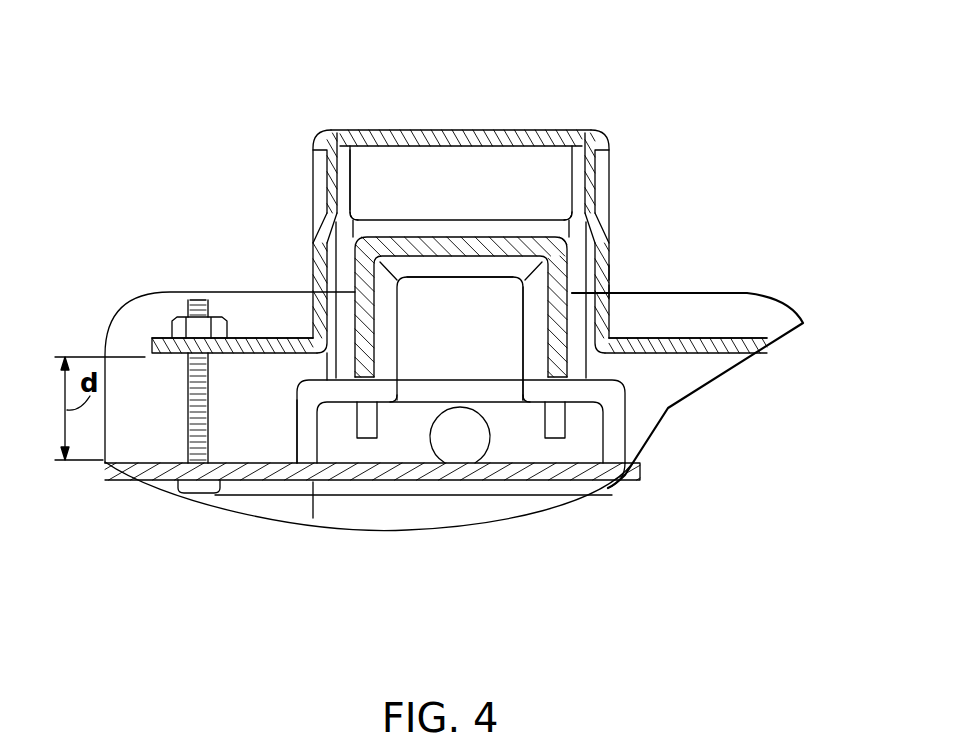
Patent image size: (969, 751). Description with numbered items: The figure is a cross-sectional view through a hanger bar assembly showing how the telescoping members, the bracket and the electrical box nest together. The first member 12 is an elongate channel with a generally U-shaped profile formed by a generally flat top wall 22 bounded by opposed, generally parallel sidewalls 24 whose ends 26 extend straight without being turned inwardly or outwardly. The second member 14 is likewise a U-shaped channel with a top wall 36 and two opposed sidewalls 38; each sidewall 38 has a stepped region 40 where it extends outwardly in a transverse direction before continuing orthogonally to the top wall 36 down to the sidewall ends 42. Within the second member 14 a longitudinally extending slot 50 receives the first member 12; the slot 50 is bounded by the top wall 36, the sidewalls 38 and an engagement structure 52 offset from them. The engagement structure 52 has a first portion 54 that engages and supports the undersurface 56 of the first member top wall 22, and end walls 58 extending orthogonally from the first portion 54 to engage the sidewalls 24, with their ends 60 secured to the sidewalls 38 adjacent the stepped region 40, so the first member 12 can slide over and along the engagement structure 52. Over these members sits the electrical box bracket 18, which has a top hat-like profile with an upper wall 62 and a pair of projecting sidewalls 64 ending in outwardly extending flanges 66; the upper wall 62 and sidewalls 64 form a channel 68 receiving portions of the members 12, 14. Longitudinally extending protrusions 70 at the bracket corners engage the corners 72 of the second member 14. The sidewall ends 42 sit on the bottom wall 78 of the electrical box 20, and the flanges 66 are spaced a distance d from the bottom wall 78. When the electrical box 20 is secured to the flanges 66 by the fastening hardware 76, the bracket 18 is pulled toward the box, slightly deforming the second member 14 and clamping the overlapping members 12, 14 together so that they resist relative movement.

The first member 12 is at (610, 290).
The second member 14 is at (610, 273).
The electrical box bracket 18 is at (378, 130).
The electrical box 20 is at (548, 470).
The top wall 22 is at (447, 253).
The sidewalls 24 is at (312, 310).
The ends 26 is at (335, 362).
The top wall 36 is at (492, 227).
The sidewalls 38 is at (255, 338).
The stepped region 40 is at (307, 384).
The sidewall ends 42 is at (307, 452).
The slot 50 is at (570, 233).
The engagement structure 52 is at (408, 267).
The first portion 54 is at (455, 270).
The undersurface 56 is at (492, 273).
The end walls 58 is at (388, 365).
The ends 60 is at (367, 400).
The upper wall 62 is at (522, 130).
The sidewalls 64 is at (310, 242).
The flanges 66 is at (250, 338).
The channel 68 is at (358, 200).
The protrusions 70 is at (313, 215).
The corners 72 is at (350, 215).
The electrical box fastening hardware 76 is at (197, 440).
The bottom wall 78 is at (400, 482).